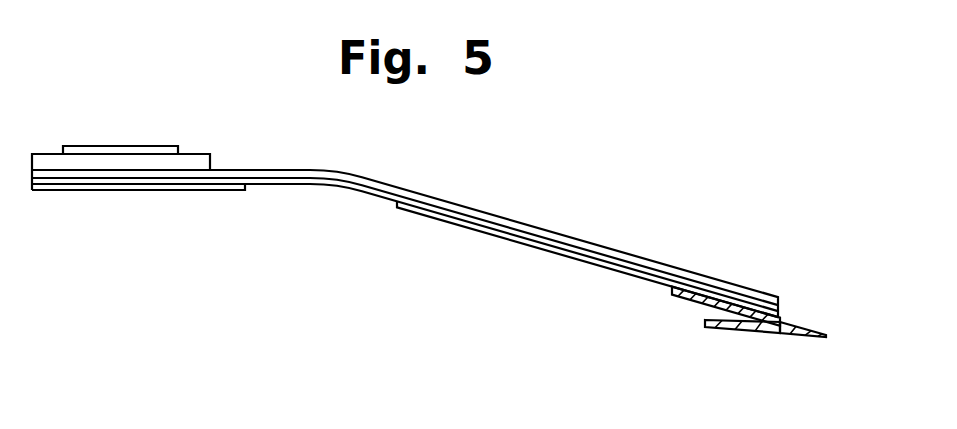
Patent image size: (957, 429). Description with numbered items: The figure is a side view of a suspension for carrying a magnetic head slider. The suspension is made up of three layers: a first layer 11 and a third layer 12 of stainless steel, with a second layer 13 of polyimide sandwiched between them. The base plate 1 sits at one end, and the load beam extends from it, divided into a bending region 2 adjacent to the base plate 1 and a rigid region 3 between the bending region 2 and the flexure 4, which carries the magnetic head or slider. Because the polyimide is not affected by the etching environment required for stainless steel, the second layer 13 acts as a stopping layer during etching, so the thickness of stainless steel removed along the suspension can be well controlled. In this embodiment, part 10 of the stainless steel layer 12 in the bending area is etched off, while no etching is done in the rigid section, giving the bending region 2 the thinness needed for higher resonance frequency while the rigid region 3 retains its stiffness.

The base plate 1 is at (206, 153).
The bending region 2 is at (340, 176).
The rigid region 3 is at (462, 206).
The flexure 4 is at (755, 333).
The etched-off part of the stainless steel layer 10 is at (290, 190).
The first layer 11 is at (678, 287).
The third layer 12 is at (577, 262).
The second layer 13 is at (783, 310).